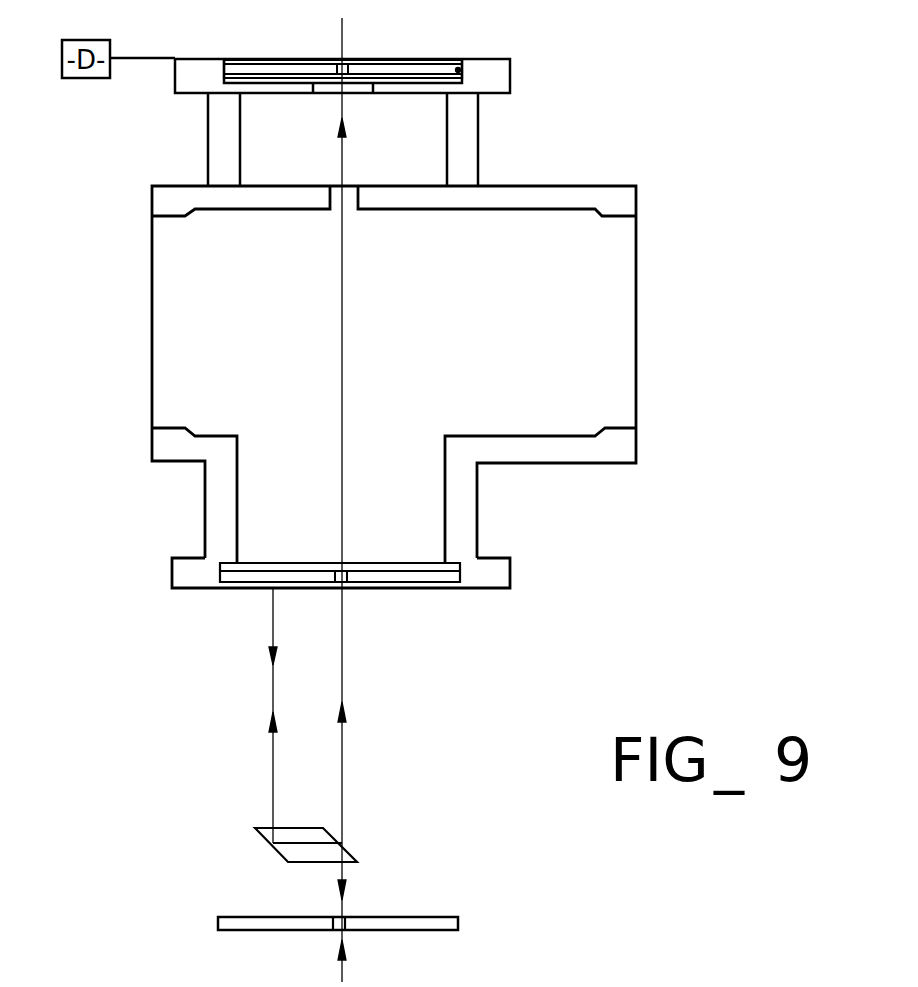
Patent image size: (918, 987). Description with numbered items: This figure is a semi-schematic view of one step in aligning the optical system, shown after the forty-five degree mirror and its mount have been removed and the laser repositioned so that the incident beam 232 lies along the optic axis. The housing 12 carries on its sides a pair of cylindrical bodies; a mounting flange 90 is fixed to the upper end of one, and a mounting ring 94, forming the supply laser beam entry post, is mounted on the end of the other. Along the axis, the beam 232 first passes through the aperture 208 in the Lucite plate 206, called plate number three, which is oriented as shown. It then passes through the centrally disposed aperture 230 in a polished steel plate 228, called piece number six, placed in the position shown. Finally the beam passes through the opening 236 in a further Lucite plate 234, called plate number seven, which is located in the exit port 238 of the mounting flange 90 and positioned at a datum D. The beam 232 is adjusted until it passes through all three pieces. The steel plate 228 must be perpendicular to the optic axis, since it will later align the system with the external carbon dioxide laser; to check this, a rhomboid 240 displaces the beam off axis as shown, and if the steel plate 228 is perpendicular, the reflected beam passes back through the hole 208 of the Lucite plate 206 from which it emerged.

The housing 12 is at (550, 198).
The mounting flange 90 is at (192, 60).
The mounting ring 94 is at (487, 592).
The Lucite plate 206 is at (455, 915).
The aperture 208 is at (343, 915).
The polished steel plate 228 is at (425, 585).
The aperture 230 is at (343, 590).
The beam 232 is at (342, 770).
The Lucite plate 234 is at (427, 60).
The aperture 236 is at (343, 60).
The exit port 238 is at (460, 72).
The rhomboid 240 is at (280, 853).